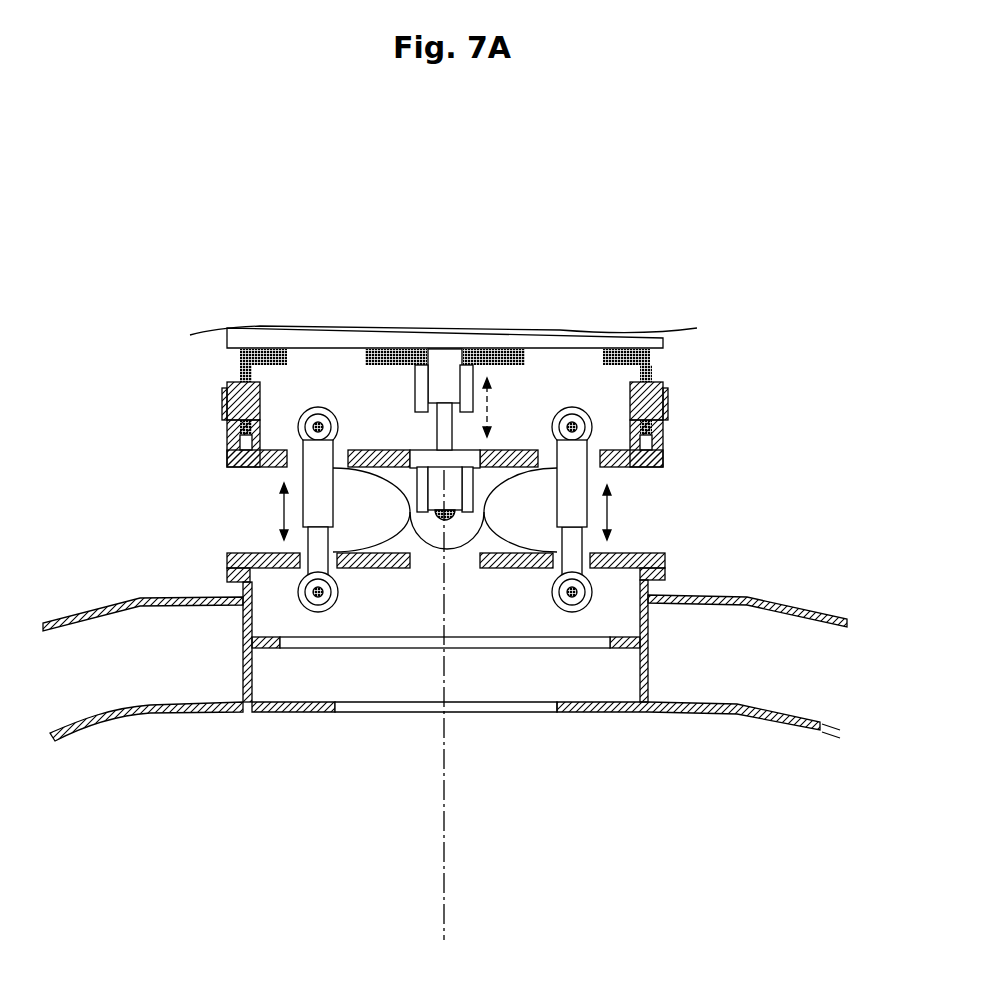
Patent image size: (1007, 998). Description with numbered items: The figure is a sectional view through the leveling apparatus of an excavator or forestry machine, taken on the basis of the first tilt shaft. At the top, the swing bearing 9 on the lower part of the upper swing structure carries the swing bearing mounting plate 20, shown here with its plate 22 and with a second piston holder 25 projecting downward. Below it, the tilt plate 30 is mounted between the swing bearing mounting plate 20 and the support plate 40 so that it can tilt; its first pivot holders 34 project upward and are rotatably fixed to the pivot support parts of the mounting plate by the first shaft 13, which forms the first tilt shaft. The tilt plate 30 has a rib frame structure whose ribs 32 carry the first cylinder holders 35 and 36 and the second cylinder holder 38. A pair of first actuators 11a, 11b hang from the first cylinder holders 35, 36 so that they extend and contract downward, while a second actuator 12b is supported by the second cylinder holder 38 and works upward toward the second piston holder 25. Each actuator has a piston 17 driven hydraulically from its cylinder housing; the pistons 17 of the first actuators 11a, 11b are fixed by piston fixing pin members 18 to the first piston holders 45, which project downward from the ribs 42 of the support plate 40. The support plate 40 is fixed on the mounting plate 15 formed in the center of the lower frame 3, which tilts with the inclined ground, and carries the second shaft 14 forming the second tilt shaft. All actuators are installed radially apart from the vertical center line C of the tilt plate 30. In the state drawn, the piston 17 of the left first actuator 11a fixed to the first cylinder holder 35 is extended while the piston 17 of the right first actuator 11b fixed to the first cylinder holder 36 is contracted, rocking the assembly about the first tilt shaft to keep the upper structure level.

The lower frame 3 is at (777, 603).
The swing bearing 9 is at (333, 336).
The first actuator 11a is at (303, 473).
The first actuator 11b is at (580, 478).
The second actuator 12b is at (442, 495).
The first shaft 13 is at (222, 407).
The second shaft 14 is at (462, 540).
The mounting plate 15 is at (230, 577).
The piston 17 is at (447, 433).
The piston fixing pin member 18 is at (580, 591).
The swing bearing mounting plate 20 is at (657, 357).
The upper plate 22 is at (397, 352).
The second piston holder 25 is at (470, 378).
The tilt plate 30 is at (227, 460).
The rib 32 is at (377, 450).
The first pivot holder 34 is at (227, 383).
The first cylinder holder 35 is at (318, 406).
The first cylinder holder 36 is at (572, 406).
The second cylinder holder 38 is at (420, 483).
The support plate 40 is at (663, 557).
The rib 42 is at (363, 568).
The first piston holder 45 is at (297, 575).
The vertical center line C is at (445, 823).